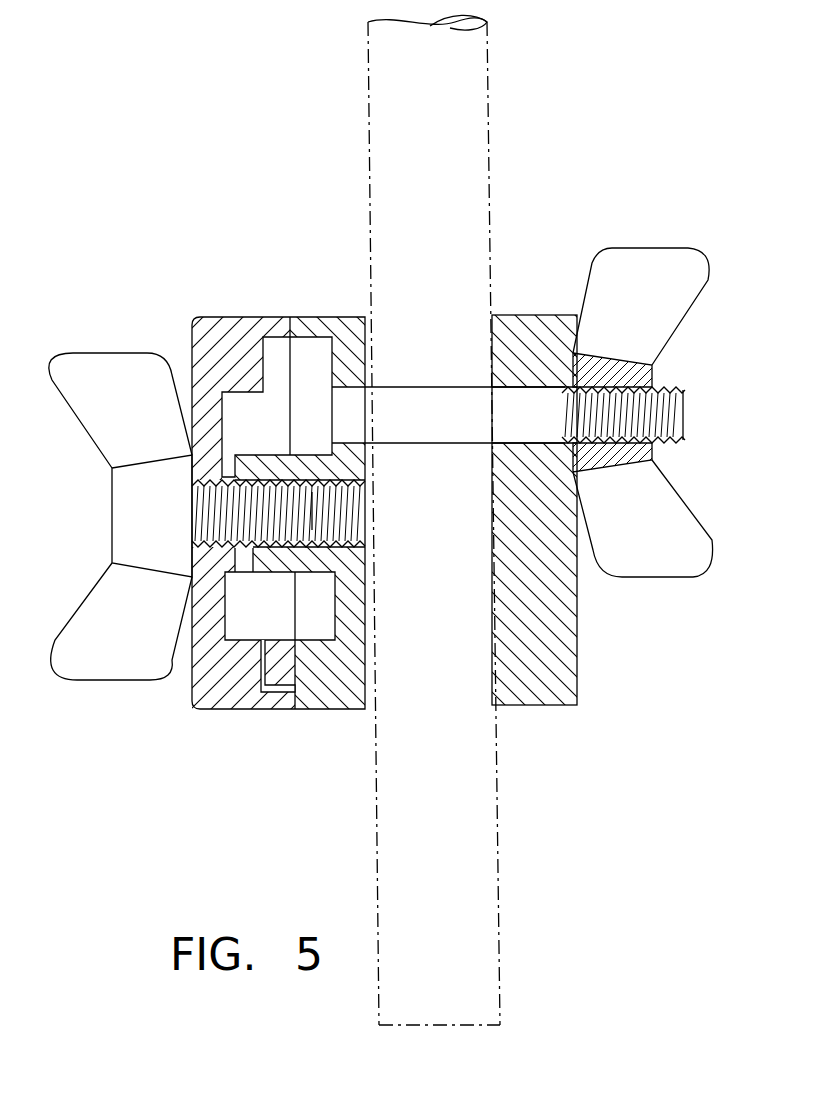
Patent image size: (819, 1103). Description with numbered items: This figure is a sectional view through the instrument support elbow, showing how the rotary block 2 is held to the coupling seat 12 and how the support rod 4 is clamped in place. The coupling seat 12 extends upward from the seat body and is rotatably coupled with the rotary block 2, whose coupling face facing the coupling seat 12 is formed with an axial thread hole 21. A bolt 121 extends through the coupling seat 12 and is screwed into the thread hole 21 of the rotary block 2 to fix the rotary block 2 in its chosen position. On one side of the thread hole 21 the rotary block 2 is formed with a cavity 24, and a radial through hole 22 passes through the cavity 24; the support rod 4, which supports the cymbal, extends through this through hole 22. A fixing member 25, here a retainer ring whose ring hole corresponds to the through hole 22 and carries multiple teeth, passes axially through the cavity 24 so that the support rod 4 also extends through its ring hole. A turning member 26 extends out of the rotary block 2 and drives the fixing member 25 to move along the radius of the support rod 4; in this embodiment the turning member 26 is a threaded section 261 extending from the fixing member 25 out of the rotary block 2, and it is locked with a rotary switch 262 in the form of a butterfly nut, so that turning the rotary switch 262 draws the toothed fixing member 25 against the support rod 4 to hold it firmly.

The rotary block 2 is at (562, 702).
The support rod 4 is at (477, 85).
The coupling seat 12 is at (222, 700).
The bolt 121 is at (103, 667).
The thread hole 21 is at (338, 531).
The through hole 22 is at (366, 316).
The cavity 24 is at (517, 388).
The fixing member 25 is at (410, 393).
The turning member 26 is at (697, 393).
The threaded section 261 is at (684, 430).
The rotary switch 262 is at (655, 257).